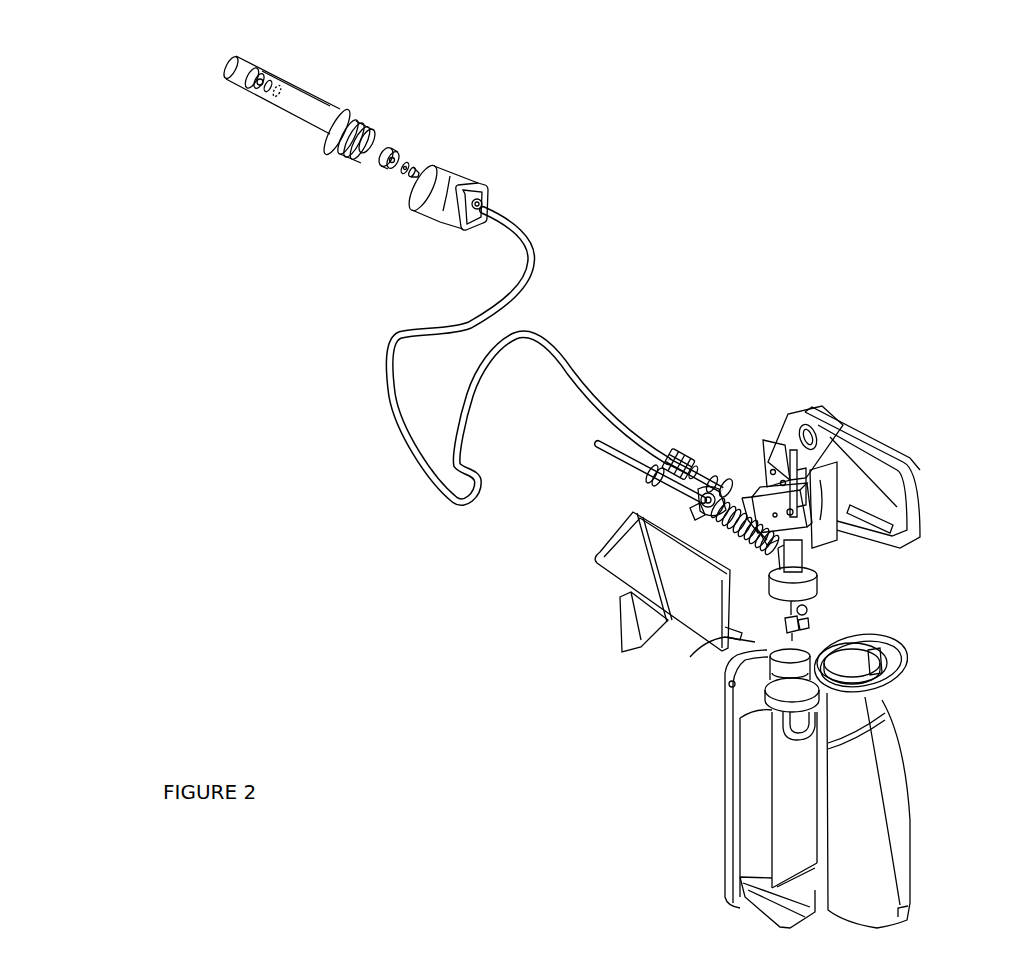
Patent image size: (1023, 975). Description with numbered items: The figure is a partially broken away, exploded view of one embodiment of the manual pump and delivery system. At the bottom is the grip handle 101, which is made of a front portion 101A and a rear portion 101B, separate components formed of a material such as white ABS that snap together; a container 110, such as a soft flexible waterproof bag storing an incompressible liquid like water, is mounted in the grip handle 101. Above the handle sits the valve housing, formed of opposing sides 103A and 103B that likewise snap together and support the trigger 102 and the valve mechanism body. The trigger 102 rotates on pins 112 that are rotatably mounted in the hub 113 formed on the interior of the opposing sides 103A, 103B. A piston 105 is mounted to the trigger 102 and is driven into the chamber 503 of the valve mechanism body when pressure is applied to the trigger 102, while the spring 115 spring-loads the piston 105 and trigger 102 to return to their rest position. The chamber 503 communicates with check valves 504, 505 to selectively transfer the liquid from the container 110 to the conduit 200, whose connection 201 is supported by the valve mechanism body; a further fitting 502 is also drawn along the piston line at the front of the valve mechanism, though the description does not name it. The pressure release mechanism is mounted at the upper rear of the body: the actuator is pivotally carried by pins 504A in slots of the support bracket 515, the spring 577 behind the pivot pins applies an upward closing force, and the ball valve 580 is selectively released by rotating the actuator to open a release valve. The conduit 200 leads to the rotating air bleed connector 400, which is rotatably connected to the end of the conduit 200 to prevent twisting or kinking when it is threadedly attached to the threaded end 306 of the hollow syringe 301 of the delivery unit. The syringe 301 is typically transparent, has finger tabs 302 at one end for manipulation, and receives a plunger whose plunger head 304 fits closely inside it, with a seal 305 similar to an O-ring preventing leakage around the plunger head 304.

The grip handle 101 is at (797, 777).
The front portion 101A is at (721, 788).
The rear portion 101B is at (896, 777).
The trigger 102 is at (622, 654).
The opposing side 103A is at (636, 581).
The opposing side 103B is at (913, 444).
The piston 105 is at (618, 472).
The container 110 is at (723, 805).
The pins 112 is at (621, 506).
The hub 113 is at (748, 421).
The spring 115 is at (829, 556).
The conduit 200 is at (529, 356).
The connection 201 is at (669, 427).
The syringe 301 is at (280, 118).
The finger tabs 302 is at (388, 115).
The plunger head 304 is at (316, 74).
The seal 305 is at (245, 107).
The end 306 is at (329, 188).
The rotating air bleed connector 400 is at (500, 180).
The fitting 502 is at (673, 400).
The chamber 503 is at (855, 584).
The check valve 504 is at (707, 656).
The pins 504A is at (884, 481).
The check valve 505 is at (850, 619).
The support bracket 515 is at (742, 464).
The spring 577 is at (880, 505).
The ball valve 580 is at (849, 392).